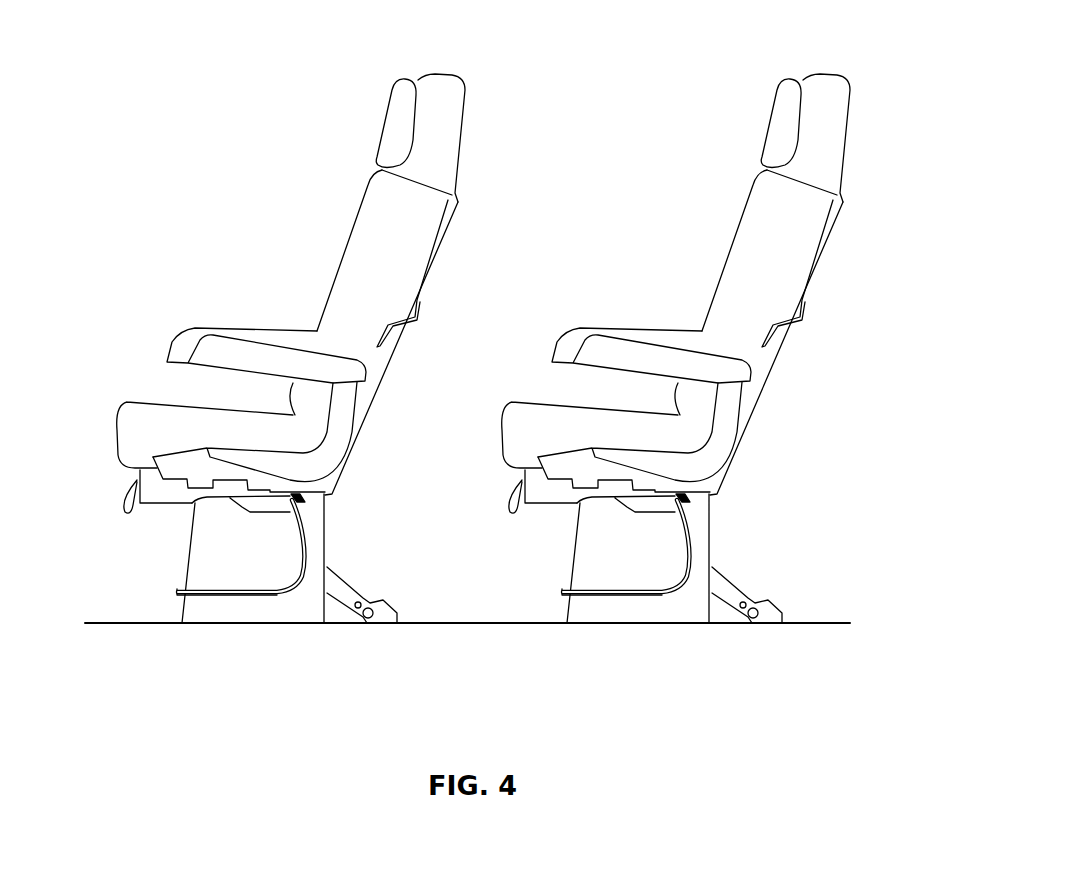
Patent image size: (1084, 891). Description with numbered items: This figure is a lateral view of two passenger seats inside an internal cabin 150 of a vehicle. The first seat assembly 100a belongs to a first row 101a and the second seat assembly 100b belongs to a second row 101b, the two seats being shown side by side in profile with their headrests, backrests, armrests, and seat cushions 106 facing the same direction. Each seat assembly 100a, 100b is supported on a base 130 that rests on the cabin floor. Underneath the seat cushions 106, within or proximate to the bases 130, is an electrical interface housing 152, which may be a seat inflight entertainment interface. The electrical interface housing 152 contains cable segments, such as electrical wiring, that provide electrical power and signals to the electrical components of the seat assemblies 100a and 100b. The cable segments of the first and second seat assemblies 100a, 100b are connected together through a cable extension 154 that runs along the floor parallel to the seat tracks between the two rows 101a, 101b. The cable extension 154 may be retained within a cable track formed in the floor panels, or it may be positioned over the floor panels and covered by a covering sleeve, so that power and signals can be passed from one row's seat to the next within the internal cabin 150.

The internal cabin 150 is at (133, 92).
The first seat assembly 100a is at (432, 62).
The second seat assembly 100b is at (817, 62).
The first row 101a is at (478, 109).
The second row 101b is at (862, 148).
The seat cushion 106 is at (125, 410).
The base 130 is at (316, 540).
The electrical interface housing 152 is at (208, 545).
The cable extension 154 is at (437, 626).